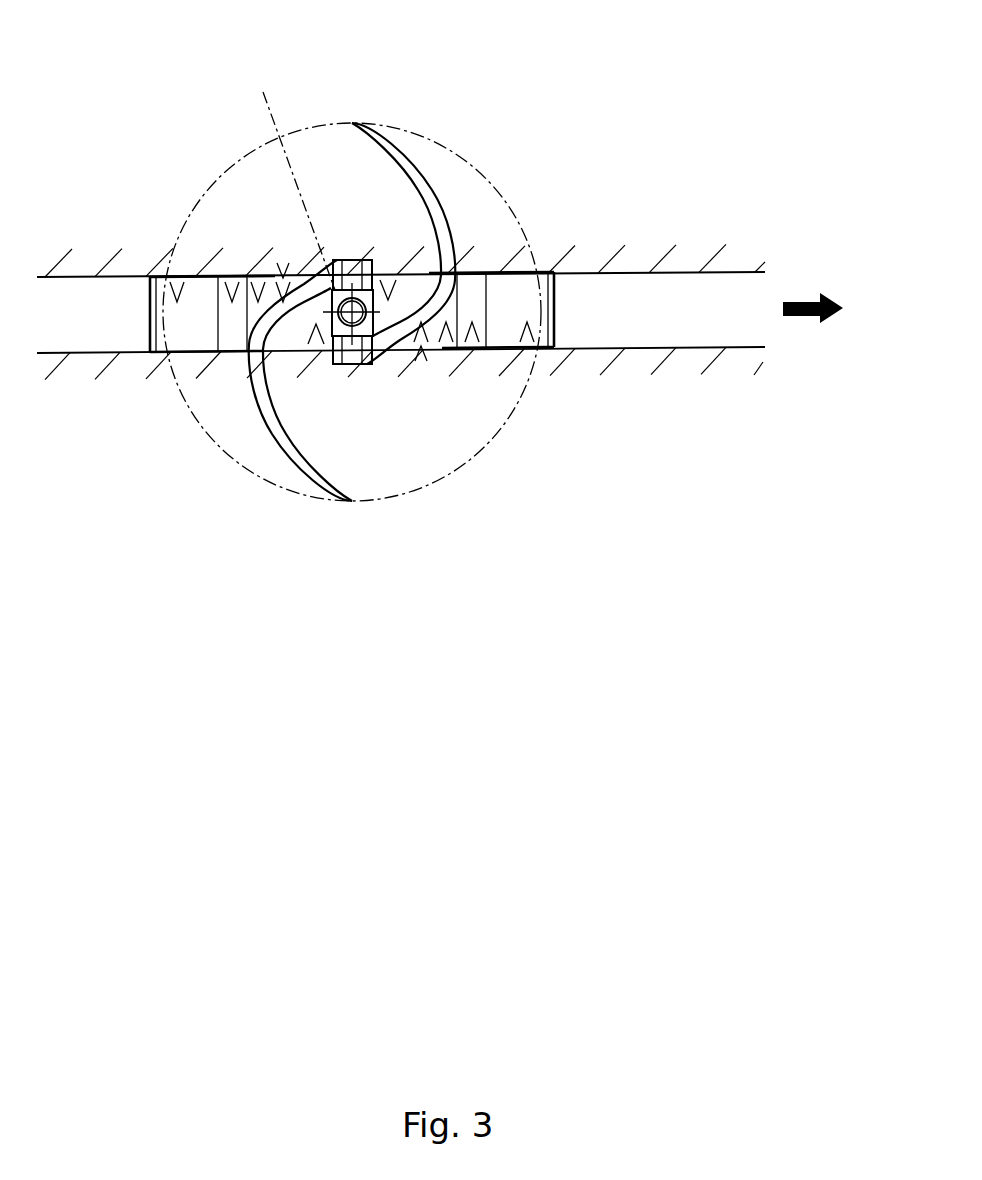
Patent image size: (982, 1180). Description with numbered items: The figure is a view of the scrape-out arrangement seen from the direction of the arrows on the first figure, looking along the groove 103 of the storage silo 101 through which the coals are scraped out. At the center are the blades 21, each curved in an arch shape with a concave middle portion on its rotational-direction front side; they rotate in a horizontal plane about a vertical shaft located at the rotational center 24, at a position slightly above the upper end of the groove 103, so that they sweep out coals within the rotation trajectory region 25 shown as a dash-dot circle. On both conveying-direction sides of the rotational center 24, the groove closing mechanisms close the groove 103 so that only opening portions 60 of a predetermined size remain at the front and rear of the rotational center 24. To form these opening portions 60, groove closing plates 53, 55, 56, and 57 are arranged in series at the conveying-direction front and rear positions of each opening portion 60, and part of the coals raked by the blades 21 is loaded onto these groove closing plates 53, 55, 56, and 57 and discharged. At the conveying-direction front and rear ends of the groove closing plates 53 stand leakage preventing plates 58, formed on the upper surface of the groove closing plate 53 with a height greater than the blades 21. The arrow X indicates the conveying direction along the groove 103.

The blade 21 is at (430, 190).
The rotational center 24 is at (287, 172).
The rotation trajectory region 25 is at (510, 210).
The groove closing plate 53 is at (177, 282).
The groove closing plate 55 is at (258, 282).
The groove closing plate 56 is at (283, 263).
The groove closing plate 57 is at (388, 278).
The leakage preventing plate 58 is at (150, 316).
The opening portion 60 is at (400, 275).
The storage silo 101 is at (612, 228).
The groove 103 is at (692, 315).
The air flow direction X is at (797, 300).